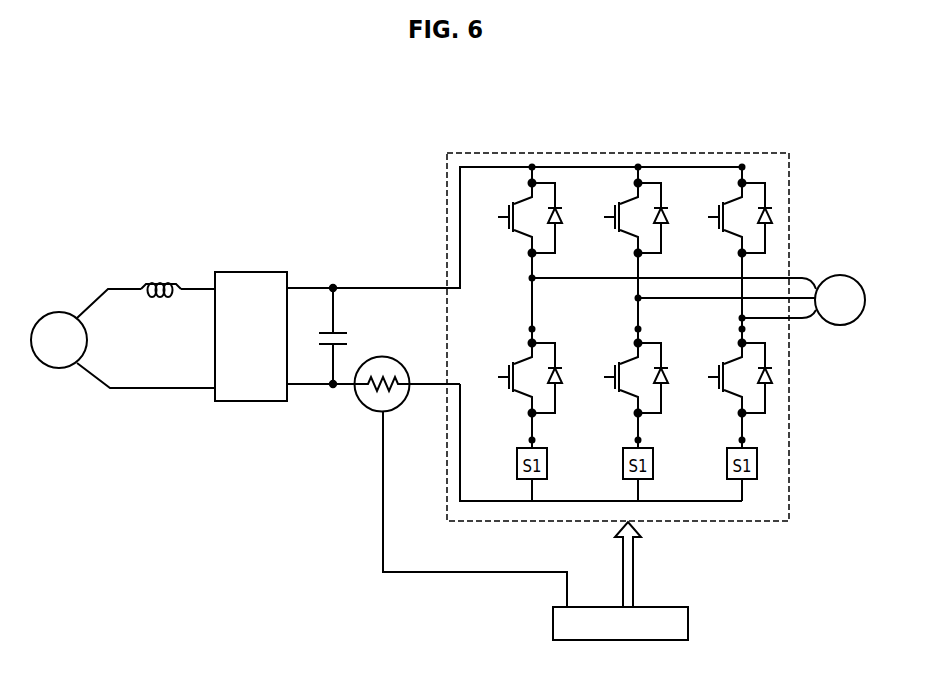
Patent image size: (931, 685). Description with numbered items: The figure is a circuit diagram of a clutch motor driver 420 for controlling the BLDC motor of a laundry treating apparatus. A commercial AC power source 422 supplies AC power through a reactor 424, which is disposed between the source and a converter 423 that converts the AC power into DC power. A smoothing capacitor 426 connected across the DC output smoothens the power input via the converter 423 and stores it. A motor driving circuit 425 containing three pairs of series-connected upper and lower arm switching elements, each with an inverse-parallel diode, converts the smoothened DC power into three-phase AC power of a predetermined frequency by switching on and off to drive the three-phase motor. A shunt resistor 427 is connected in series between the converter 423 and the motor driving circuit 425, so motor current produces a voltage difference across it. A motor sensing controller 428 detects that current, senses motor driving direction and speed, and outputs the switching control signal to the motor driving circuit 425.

The clutch motor driver 420 is at (102, 150).
The commercial AC power source 422 is at (62, 312).
The converter 423 is at (253, 272).
The reactor 424 is at (162, 283).
The motor driving circuit 425 is at (620, 153).
The smoothing capacitor 426 is at (345, 332).
The shunt resistor 427 is at (362, 407).
The motor sensing controller 428 is at (688, 620).